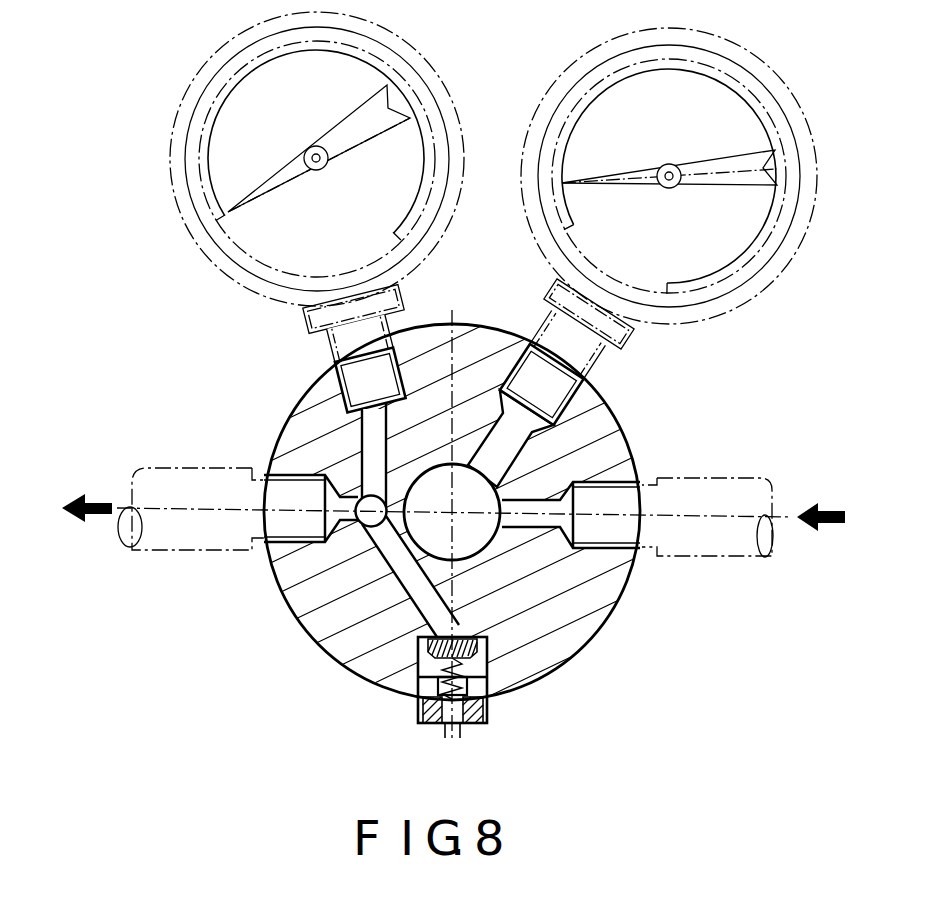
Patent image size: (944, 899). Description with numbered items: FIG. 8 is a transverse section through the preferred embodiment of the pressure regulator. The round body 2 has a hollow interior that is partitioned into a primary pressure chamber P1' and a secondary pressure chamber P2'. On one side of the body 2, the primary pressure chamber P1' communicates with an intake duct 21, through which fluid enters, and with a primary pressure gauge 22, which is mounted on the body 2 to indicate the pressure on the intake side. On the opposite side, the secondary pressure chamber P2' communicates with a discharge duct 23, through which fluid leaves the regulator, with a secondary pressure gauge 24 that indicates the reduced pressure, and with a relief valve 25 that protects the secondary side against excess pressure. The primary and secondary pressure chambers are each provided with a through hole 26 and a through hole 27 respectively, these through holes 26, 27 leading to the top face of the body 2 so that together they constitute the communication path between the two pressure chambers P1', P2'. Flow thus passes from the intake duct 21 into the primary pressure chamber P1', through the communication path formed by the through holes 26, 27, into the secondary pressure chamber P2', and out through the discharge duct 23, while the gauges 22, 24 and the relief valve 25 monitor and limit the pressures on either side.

The body 2 is at (600, 644).
The intake duct 21 is at (716, 490).
The primary pressure gauge 22 is at (773, 92).
The discharge duct 23 is at (204, 482).
The secondary pressure gauge 24 is at (394, 52).
The relief valve 25 is at (470, 722).
The through hole 26 is at (477, 540).
The through hole 27 is at (368, 515).
The primary pressure chamber P1' is at (614, 559).
The secondary pressure chamber P2' is at (286, 568).